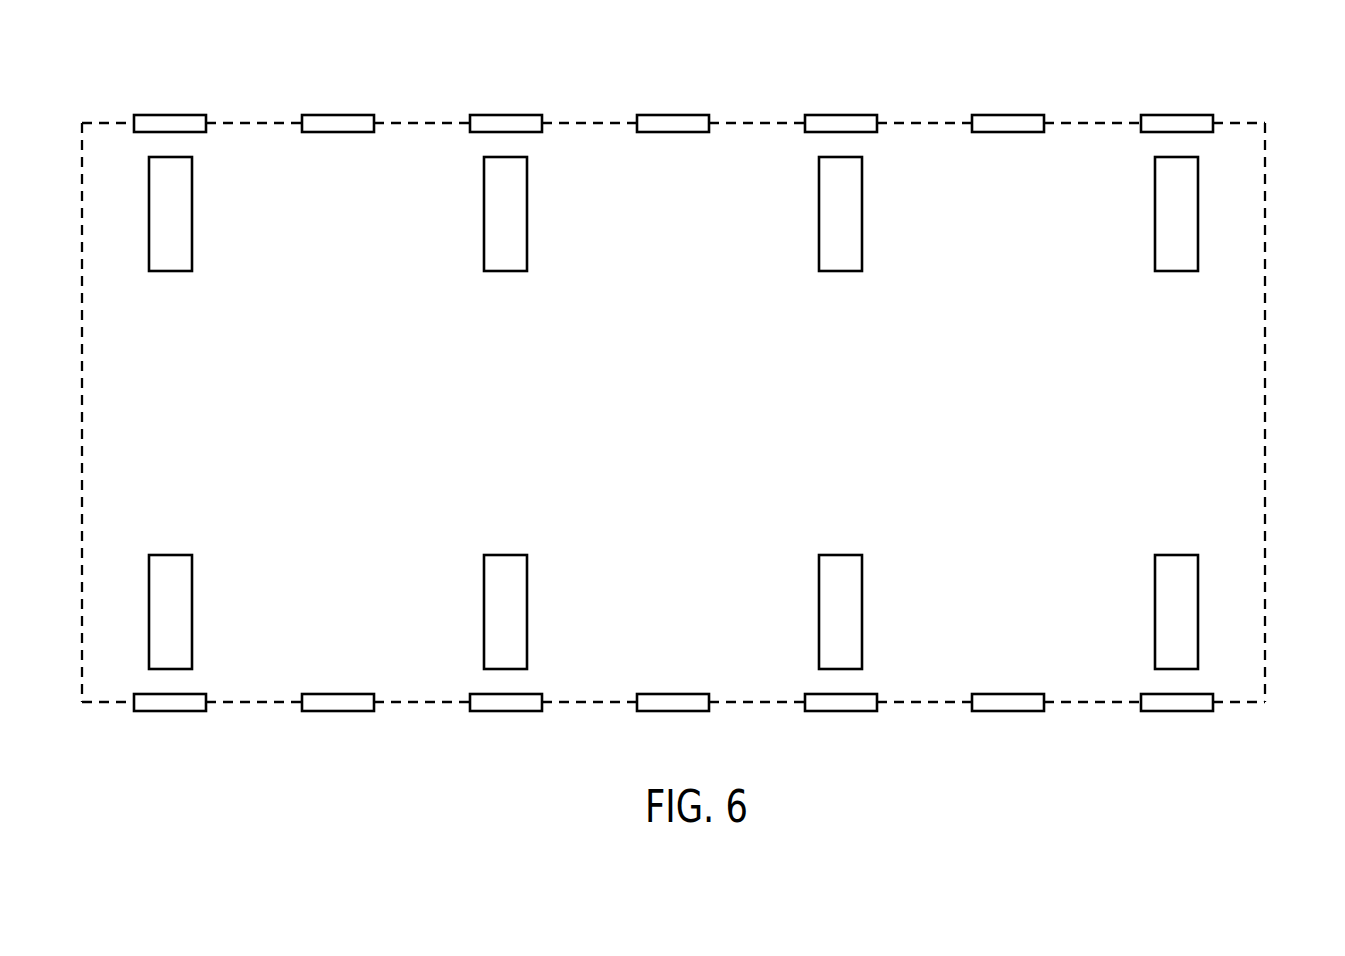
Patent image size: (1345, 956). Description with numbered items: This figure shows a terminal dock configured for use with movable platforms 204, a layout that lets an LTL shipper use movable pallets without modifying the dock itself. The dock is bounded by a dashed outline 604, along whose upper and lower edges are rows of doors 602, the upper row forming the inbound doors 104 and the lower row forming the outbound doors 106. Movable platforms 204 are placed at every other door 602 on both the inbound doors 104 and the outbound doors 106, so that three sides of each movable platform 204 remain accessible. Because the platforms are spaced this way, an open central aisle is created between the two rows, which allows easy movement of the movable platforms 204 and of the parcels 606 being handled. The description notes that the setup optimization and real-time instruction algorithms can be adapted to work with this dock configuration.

The inbound doors 104 is at (728, 90).
The outbound doors 106 is at (1250, 736).
The movable platform 204 is at (170, 272).
The door 602 is at (337, 115).
The dashed boundary 604 is at (1245, 413).
The parcels 606 is at (840, 272).